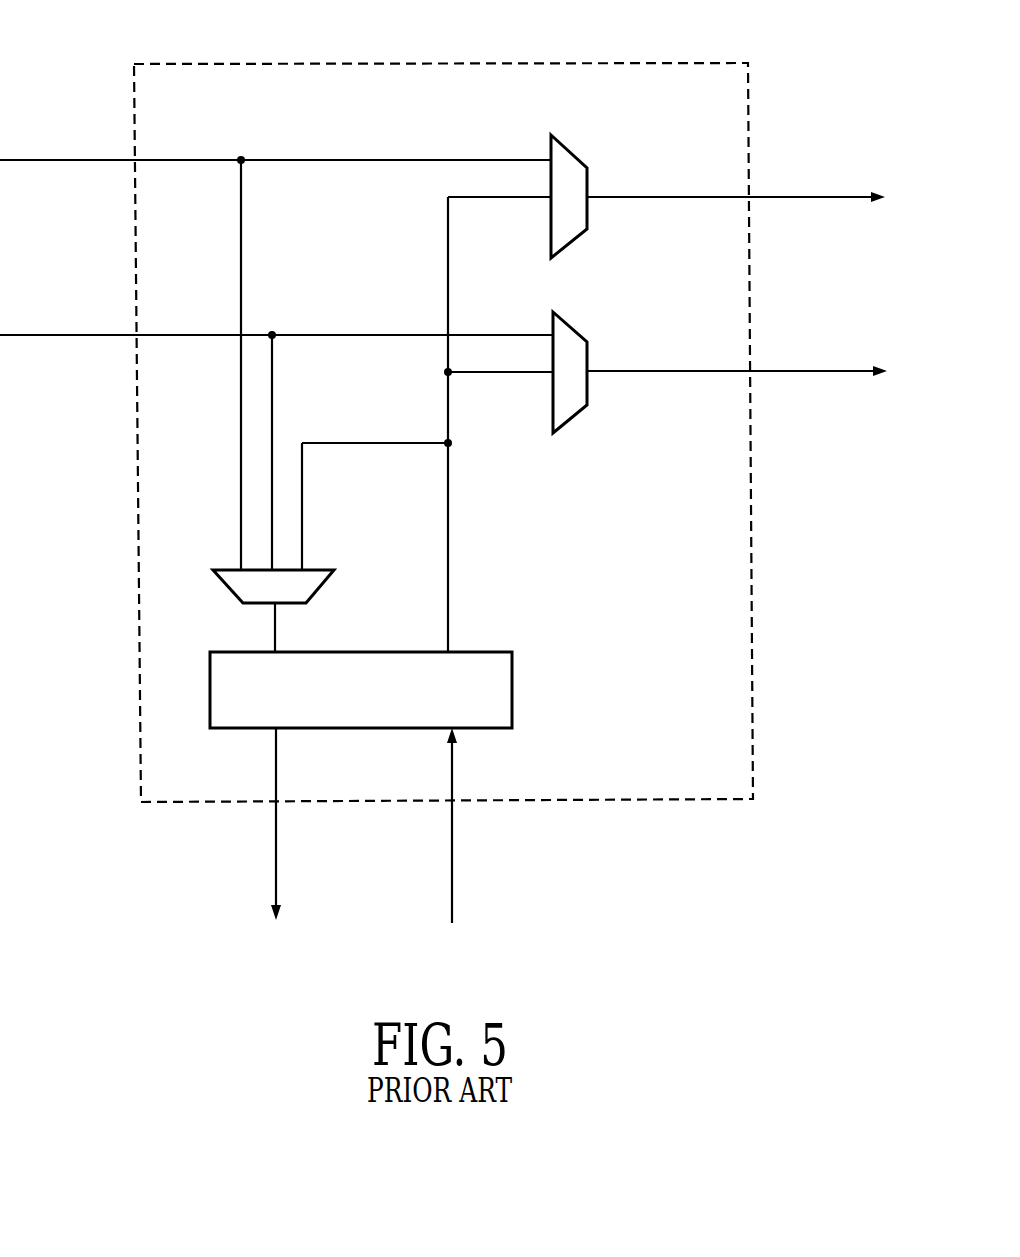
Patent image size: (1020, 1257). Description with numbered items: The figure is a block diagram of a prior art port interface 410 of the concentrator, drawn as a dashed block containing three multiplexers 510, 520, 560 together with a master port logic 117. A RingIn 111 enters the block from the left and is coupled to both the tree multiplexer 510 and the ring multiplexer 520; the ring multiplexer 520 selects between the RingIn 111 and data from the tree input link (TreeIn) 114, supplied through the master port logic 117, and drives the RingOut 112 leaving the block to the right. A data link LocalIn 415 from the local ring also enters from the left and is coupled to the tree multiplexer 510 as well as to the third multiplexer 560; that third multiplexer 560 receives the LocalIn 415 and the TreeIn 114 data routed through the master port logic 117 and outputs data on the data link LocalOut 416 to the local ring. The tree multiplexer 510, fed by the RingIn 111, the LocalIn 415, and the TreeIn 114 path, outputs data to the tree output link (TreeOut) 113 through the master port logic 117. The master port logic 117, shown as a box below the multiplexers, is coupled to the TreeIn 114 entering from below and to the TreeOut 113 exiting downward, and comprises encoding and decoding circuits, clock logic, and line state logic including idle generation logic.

The port interface 410 is at (377, 63).
The LocalIn data link 415 is at (127, 161).
The RingIn 111 is at (128, 336).
The third multiplexer 560 is at (573, 160).
The multiplexer 520 is at (575, 340).
The LocalOut data link 416 is at (758, 198).
The RingOut 112 is at (762, 372).
The multiplexer 510 is at (325, 570).
The master port logic 117 is at (482, 650).
The tree output link (TreeOut) 113 is at (275, 862).
The tree input link (TreeIn) 114 is at (453, 857).